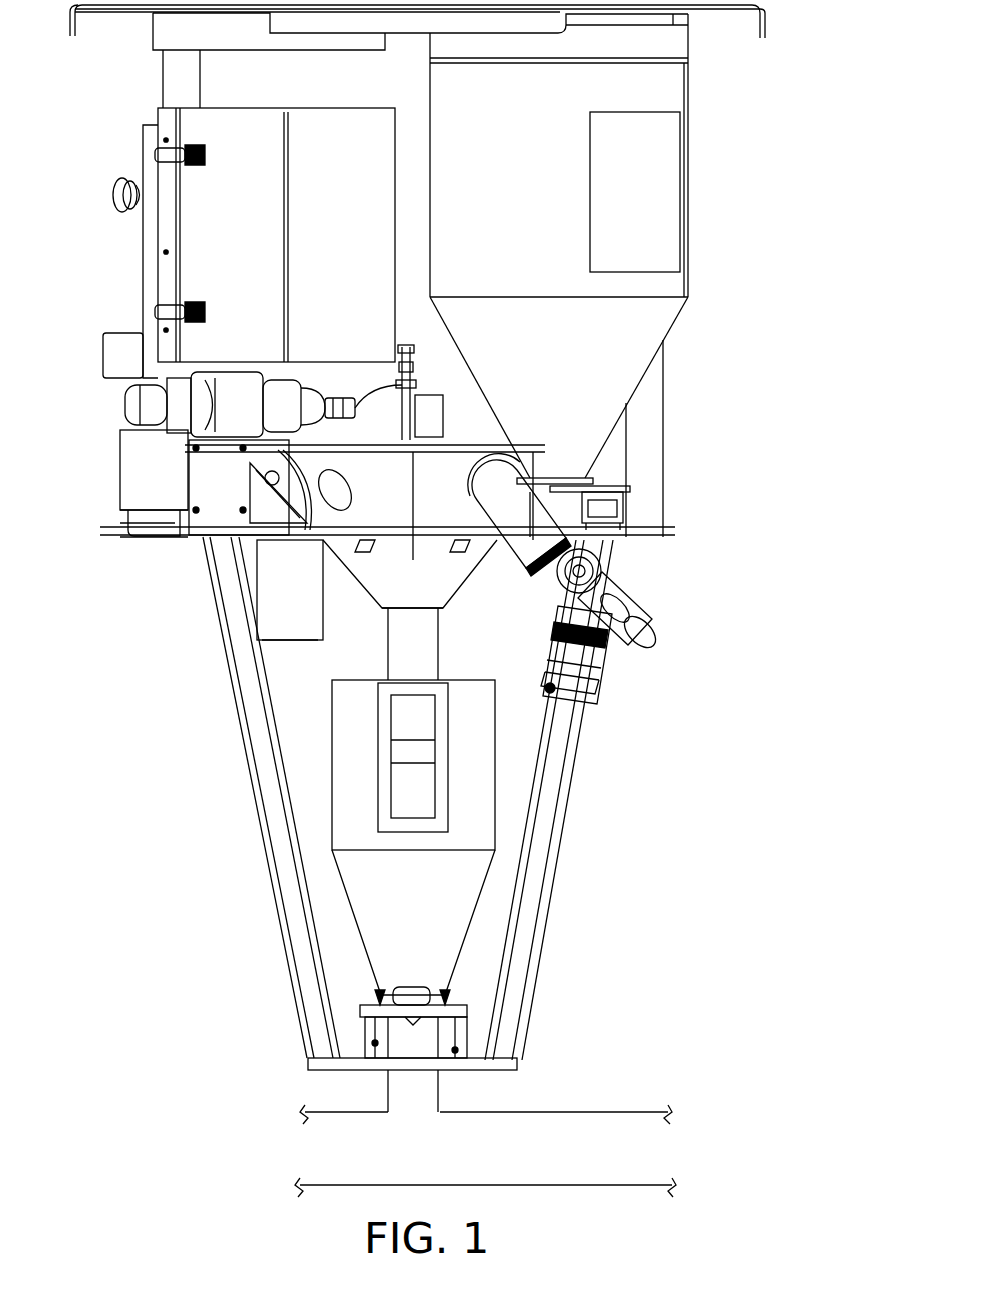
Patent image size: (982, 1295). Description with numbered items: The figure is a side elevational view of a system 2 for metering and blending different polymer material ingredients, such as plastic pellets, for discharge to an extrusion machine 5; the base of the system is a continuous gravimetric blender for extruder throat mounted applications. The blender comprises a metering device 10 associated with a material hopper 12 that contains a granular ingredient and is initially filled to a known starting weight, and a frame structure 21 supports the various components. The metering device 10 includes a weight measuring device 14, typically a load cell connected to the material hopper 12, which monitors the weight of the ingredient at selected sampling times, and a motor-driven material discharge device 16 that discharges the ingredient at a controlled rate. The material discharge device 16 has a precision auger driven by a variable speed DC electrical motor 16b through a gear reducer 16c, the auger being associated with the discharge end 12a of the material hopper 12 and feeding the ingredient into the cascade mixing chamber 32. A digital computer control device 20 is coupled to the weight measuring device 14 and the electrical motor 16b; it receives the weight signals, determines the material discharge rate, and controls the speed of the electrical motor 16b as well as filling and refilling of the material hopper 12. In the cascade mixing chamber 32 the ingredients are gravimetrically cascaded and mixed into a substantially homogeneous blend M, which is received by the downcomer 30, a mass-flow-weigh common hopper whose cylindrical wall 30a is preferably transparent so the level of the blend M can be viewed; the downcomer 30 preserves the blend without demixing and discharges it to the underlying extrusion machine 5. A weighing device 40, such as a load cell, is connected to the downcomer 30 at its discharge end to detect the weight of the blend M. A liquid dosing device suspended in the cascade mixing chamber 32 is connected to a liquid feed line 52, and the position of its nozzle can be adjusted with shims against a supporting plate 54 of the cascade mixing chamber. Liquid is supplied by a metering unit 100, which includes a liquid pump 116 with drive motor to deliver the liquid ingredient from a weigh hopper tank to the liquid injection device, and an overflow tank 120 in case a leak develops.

The system 2 is at (770, 234).
The extrusion machine 5 is at (592, 1100).
The metering device 10 is at (645, 573).
The material hopper 12 is at (690, 96).
The discharge end 12a is at (585, 468).
The weight measuring device 14 is at (620, 510).
The material discharge device 16 is at (660, 600).
The electrical motor 16b is at (605, 668).
The gear reducer 16c is at (612, 652).
The computer control device 20 is at (530, 700).
The frame structure 21 is at (668, 375).
The downcomer 30 is at (515, 808).
The cylindrical wall 30a is at (395, 797).
The cascade mixing chamber 32 is at (372, 615).
The weighing device 40 is at (470, 1022).
The liquid feed line 52 is at (412, 390).
The supporting plate 54 is at (470, 444).
The metering unit 100 is at (362, 166).
The liquid pump 116 is at (135, 485).
The overflow tank 120 is at (280, 597).
The blend M is at (400, 770).